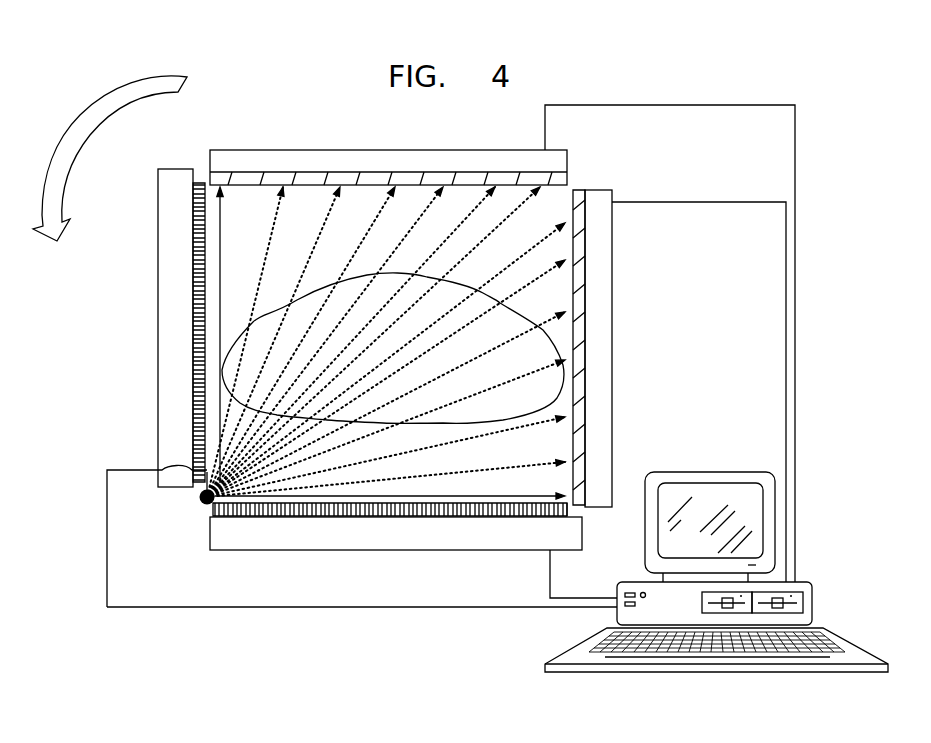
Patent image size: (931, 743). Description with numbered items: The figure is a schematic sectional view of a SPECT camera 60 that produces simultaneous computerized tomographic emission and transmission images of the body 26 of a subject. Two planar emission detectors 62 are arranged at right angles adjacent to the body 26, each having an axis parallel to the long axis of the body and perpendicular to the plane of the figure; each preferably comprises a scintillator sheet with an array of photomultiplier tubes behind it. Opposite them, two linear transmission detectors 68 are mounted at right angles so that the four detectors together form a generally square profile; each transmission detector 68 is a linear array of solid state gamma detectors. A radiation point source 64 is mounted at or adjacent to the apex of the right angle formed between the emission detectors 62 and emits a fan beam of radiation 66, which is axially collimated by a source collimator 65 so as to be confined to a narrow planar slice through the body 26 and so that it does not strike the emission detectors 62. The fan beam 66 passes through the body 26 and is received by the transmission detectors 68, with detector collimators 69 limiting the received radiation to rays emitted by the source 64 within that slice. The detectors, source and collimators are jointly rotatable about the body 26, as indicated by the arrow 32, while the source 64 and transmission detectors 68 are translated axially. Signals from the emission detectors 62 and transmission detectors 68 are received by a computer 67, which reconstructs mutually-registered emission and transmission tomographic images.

The body 26 is at (272, 315).
The arrow 32 is at (160, 72).
The SPECT camera 60 is at (637, 82).
The planar emission detector 62 is at (176, 354).
The radiation point source 64 is at (200, 510).
The source collimator 65 is at (162, 472).
The fan beam of radiation 66 is at (220, 228).
The computer 67 is at (697, 476).
The linear transmission detector 68 is at (290, 150).
The detector collimator 69 is at (582, 196).